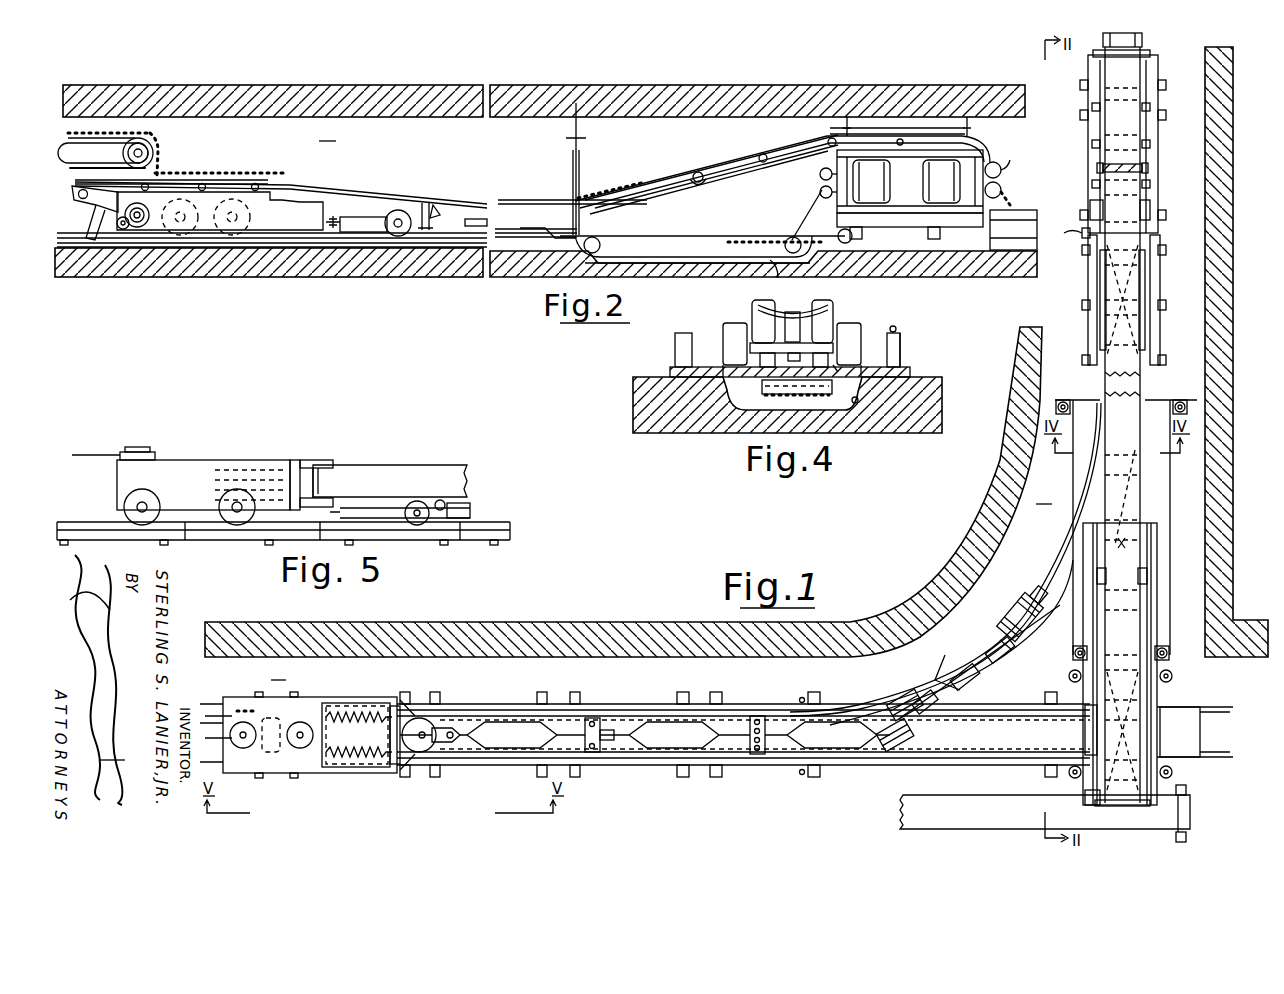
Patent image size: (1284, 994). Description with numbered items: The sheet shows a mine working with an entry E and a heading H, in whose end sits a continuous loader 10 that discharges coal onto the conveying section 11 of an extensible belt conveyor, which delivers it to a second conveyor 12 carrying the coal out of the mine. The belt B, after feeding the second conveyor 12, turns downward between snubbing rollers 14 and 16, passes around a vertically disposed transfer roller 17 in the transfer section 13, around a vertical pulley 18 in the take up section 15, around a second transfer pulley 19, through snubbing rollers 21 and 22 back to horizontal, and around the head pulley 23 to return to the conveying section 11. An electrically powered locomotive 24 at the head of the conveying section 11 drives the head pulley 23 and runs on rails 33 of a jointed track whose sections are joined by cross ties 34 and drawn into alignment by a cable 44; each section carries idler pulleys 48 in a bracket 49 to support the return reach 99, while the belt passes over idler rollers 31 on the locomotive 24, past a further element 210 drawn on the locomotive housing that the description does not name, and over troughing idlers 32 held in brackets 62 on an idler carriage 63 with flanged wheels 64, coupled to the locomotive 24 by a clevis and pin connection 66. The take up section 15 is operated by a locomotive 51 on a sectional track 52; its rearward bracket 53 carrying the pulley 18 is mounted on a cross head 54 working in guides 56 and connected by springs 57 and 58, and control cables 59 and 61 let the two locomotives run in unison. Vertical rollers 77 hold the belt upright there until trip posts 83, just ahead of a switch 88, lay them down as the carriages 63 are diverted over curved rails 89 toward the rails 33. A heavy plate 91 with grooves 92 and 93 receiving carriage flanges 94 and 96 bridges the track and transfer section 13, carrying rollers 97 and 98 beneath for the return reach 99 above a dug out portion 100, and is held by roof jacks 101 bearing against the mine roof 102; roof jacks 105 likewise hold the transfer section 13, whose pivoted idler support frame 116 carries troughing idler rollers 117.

In FIG. 2, the continuous loader 10 is at (119, 152).
In FIG. 1, the continuous loader 10 is at (1143, 40).
In FIG. 2, the conveying section 11 is at (371, 187).
In FIG. 1, the conveying section 11 is at (1145, 497).
In FIG. 2, the second conveyor 12 is at (1037, 214).
In FIG. 1, the second conveyor 12 is at (945, 806).
In FIG. 2, the transfer section 13 is at (926, 134).
In FIG. 1, the transfer section 13 is at (1162, 752).
In FIG. 2, the snubbing roller 14 is at (1003, 168).
In FIG. 1, the take up section 15 is at (467, 760).
In FIG. 2, the snubbing roller 16 is at (1003, 190).
In FIG. 2, the transfer roller 17 is at (930, 166).
In FIG. 1, the transfer roller 17 is at (1090, 797).
In FIG. 1, the vertical pulley 18 is at (430, 732).
In FIG. 2, the second transfer pulley 19 is at (888, 180).
In FIG. 1, the second transfer pulley 19 is at (1100, 714).
In FIG. 2, the snubbing roller 21 is at (820, 172).
In FIG. 2, the snubbing roller 22 is at (820, 190).
In FIG. 2, the head pulley 23 is at (84, 207).
In FIG. 1, the head pulley 23 is at (1150, 55).
In FIG. 2, the locomotive 24 is at (280, 218).
In FIG. 1, the locomotive 24 is at (1097, 120).
In FIG. 2, the idler rollers 31 is at (212, 178).
In FIG. 2, the troughing idlers 32 is at (427, 203).
In FIG. 4, the troughing idlers 32 is at (826, 304).
In FIG. 1, the troughing idlers 32 is at (1100, 326).
In FIG. 1, the rails 33 is at (1160, 275).
In FIG. 5, the rails 33 is at (497, 525).
In FIG. 1, the cross ties 34 is at (576, 692).
In FIG. 2, the cable 44 is at (118, 222).
In FIG. 2, the idler pulleys 48 is at (425, 248).
In FIG. 2, the bracket 49 is at (533, 228).
In FIG. 1, the locomotive 51 is at (310, 700).
In FIG. 5, the locomotive 51 is at (200, 460).
In FIG. 1, the sectional track 52 is at (492, 704).
In FIG. 1, the bracket 53 is at (418, 724).
In FIG. 5, the bracket 53 is at (318, 458).
In FIG. 1, the cross head 54 is at (396, 706).
In FIG. 1, the guides 56 is at (350, 704).
In FIG. 5, the guides 56 is at (268, 466).
In FIG. 1, the spring 57 is at (359, 729).
In FIG. 1, the spring 58 is at (359, 743).
In FIG. 1, the electric control cable 59 is at (212, 712).
In FIG. 5, the electric control cable 59 is at (100, 455).
In FIG. 1, the electric control cable 61 is at (1080, 240).
In FIG. 2, the brackets 62 is at (437, 210).
In FIG. 4, the brackets 62 is at (758, 308).
In FIG. 2, the idler carriage 63 is at (366, 222).
In FIG. 4, the idler carriage 63 is at (800, 344).
In FIG. 1, the idler carriage 63 is at (522, 745).
In FIG. 5, the idler carriage 63 is at (470, 510).
In FIG. 2, the flanged wheels 64 is at (399, 210).
In FIG. 4, the flanged wheels 64 is at (836, 367).
In FIG. 5, the flanged wheels 64 is at (412, 502).
In FIG. 2, the clevis and pin connection 66 is at (333, 227).
In FIG. 1, the vertical roller 77 is at (1030, 648).
In FIG. 1, the trip post 83 is at (802, 697).
In FIG. 1, the switch 88 is at (830, 770).
In FIG. 1, the rails 89 is at (937, 668).
In FIG. 2, the plate 91 is at (652, 237).
In FIG. 4, the plate 91 is at (894, 347).
In FIG. 1, the plate 91 is at (1073, 582).
In FIG. 4, the groove 92 is at (733, 366).
In FIG. 1, the groove 92 is at (1083, 500).
In FIG. 4, the groove 93 is at (866, 365).
In FIG. 1, the groove 93 is at (1120, 543).
In FIG. 4, the flange 94 is at (723, 322).
In FIG. 4, the flange 96 is at (851, 322).
In FIG. 2, the roller 97 is at (598, 245).
In FIG. 2, the roller 98 is at (786, 240).
In FIG. 4, the roller 98 is at (762, 387).
In FIG. 2, the return reach 99 is at (690, 262).
In FIG. 2, the dug out portion 100 is at (780, 270).
In FIG. 4, the dug out portion 100 is at (858, 402).
In FIG. 2, the roof jacks 101 is at (584, 139).
In FIG. 4, the roof jacks 101 is at (675, 352).
In FIG. 1, the roof jacks 101 is at (1064, 401).
In FIG. 2, the roof of the mine 102 is at (651, 118).
In FIG. 2, the roof jacks 105 is at (830, 132).
In FIG. 1, the roof jacks 105 is at (1173, 678).
In FIG. 2, the idler support frame 116 is at (735, 170).
In FIG. 2, the troughing idler rollers 117 is at (697, 184).
In FIG. 1, the troughing idler rollers 117 is at (1150, 574).
In FIG. 1, the roller 210 is at (1150, 168).
In FIG. 2, the belt B is at (882, 186).
In FIG. 4, the belt B is at (770, 395).
In FIG. 1, the belt B is at (1135, 625).
In FIG. 5, the belt B is at (438, 472).
In FIG. 1, the entry E is at (278, 672).
In FIG. 2, the heading H is at (327, 132).
In FIG. 1, the heading H is at (1044, 495).